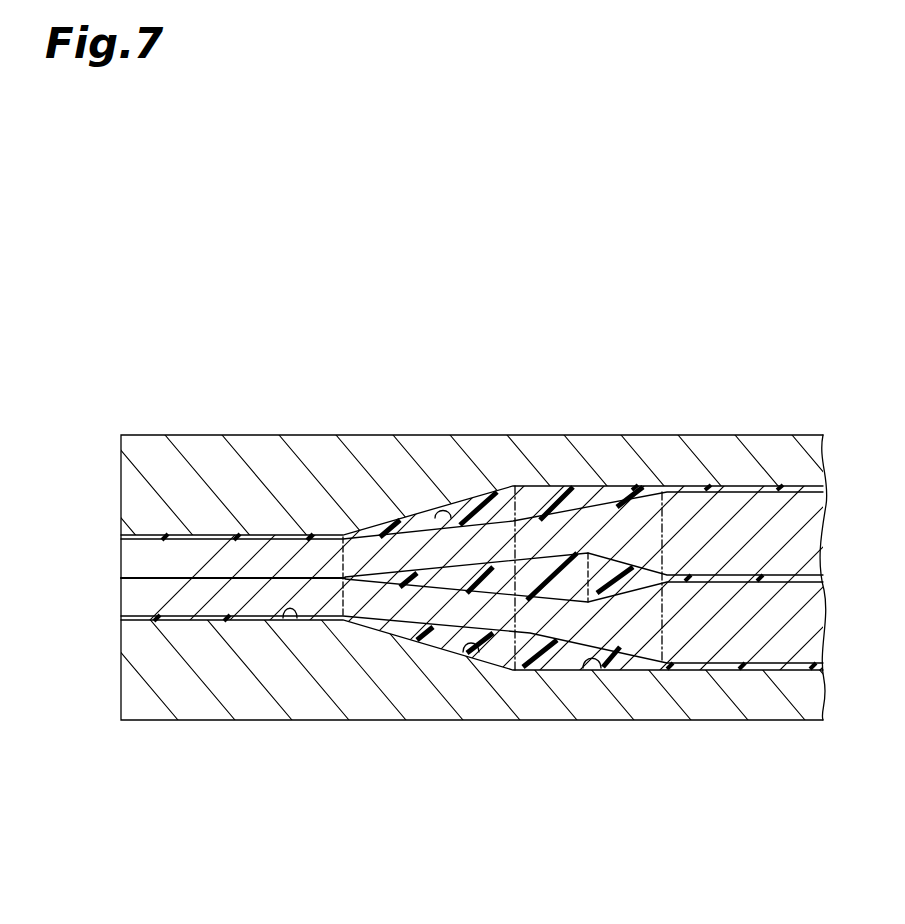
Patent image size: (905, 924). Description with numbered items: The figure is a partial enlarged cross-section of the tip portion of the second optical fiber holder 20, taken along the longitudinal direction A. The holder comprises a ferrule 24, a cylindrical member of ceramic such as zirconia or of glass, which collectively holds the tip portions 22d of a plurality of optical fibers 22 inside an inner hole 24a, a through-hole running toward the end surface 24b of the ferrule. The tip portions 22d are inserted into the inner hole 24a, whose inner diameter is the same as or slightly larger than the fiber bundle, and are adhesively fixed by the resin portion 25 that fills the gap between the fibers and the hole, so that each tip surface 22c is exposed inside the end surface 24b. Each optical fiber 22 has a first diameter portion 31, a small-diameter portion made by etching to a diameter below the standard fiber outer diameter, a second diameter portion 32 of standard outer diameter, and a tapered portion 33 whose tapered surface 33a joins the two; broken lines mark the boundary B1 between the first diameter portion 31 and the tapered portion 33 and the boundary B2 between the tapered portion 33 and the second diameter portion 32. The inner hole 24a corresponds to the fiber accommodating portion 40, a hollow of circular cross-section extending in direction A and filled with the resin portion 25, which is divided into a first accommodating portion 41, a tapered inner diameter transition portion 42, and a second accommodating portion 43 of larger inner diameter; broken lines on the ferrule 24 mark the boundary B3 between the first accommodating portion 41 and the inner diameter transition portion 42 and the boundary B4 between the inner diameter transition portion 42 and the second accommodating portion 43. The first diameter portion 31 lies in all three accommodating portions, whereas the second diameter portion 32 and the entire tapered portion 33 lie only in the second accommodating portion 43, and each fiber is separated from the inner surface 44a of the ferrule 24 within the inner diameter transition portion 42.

The second optical fiber holder 20 is at (778, 352).
The optical fiber 22 is at (748, 336).
The tip surface 22c is at (120, 598).
The tip portion 22d is at (195, 552).
The ferrule 24 is at (212, 722).
The inner hole 24a is at (620, 660).
The end surface 24b is at (120, 458).
The resin portion 25 is at (648, 662).
The first diameter portion 31 is at (305, 550).
The second diameter portion 32 is at (720, 513).
The tapered portion 33 is at (633, 520).
The tapered surface 33a is at (630, 660).
The fiber accommodating portion 40 is at (613, 779).
The first accommodating portion 41 is at (287, 620).
The inner diameter transition portion 42 is at (470, 655).
The second accommodating portion 43 is at (592, 670).
The inner surface 44a is at (443, 508).
The boundary B1 is at (612, 540).
The boundary B2 is at (668, 515).
The boundary B3 is at (362, 558).
The boundary B4 is at (516, 486).
The direction A is at (570, 853).